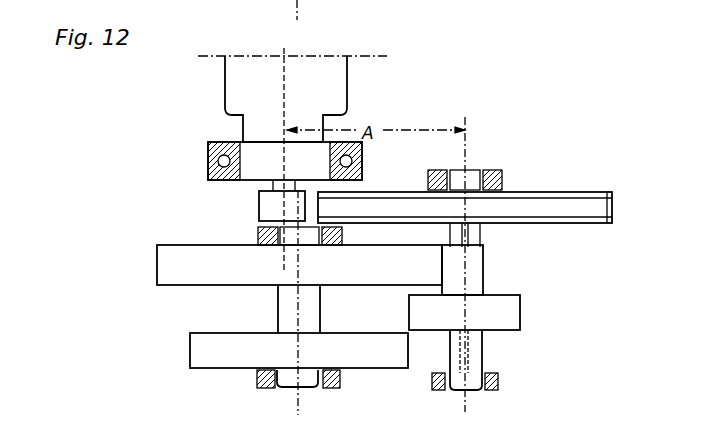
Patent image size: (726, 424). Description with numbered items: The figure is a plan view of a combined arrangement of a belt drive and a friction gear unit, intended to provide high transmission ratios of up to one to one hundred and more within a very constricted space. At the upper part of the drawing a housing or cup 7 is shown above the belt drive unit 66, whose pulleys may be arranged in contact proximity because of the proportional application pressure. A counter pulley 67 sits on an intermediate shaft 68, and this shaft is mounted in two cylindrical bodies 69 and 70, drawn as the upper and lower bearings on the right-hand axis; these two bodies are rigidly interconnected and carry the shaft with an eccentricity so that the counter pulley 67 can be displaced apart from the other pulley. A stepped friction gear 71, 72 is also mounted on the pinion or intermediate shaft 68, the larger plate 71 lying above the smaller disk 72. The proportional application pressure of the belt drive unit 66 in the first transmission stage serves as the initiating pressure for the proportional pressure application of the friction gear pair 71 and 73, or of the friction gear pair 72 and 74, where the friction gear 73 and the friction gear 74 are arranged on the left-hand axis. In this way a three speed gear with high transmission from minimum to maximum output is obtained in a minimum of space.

The cup-shaped housing 7 is at (337, 81).
The belt drive unit 66 is at (363, 153).
The counter pulley 67 is at (538, 192).
The intermediate shaft 68 is at (472, 236).
The cylindrical body 69 is at (496, 170).
The cylindrical body 70 is at (491, 385).
The stepped friction gear 71 is at (482, 271).
The stepped friction gear 72 is at (518, 314).
The friction gear 73 is at (392, 284).
The friction gear 74 is at (377, 368).